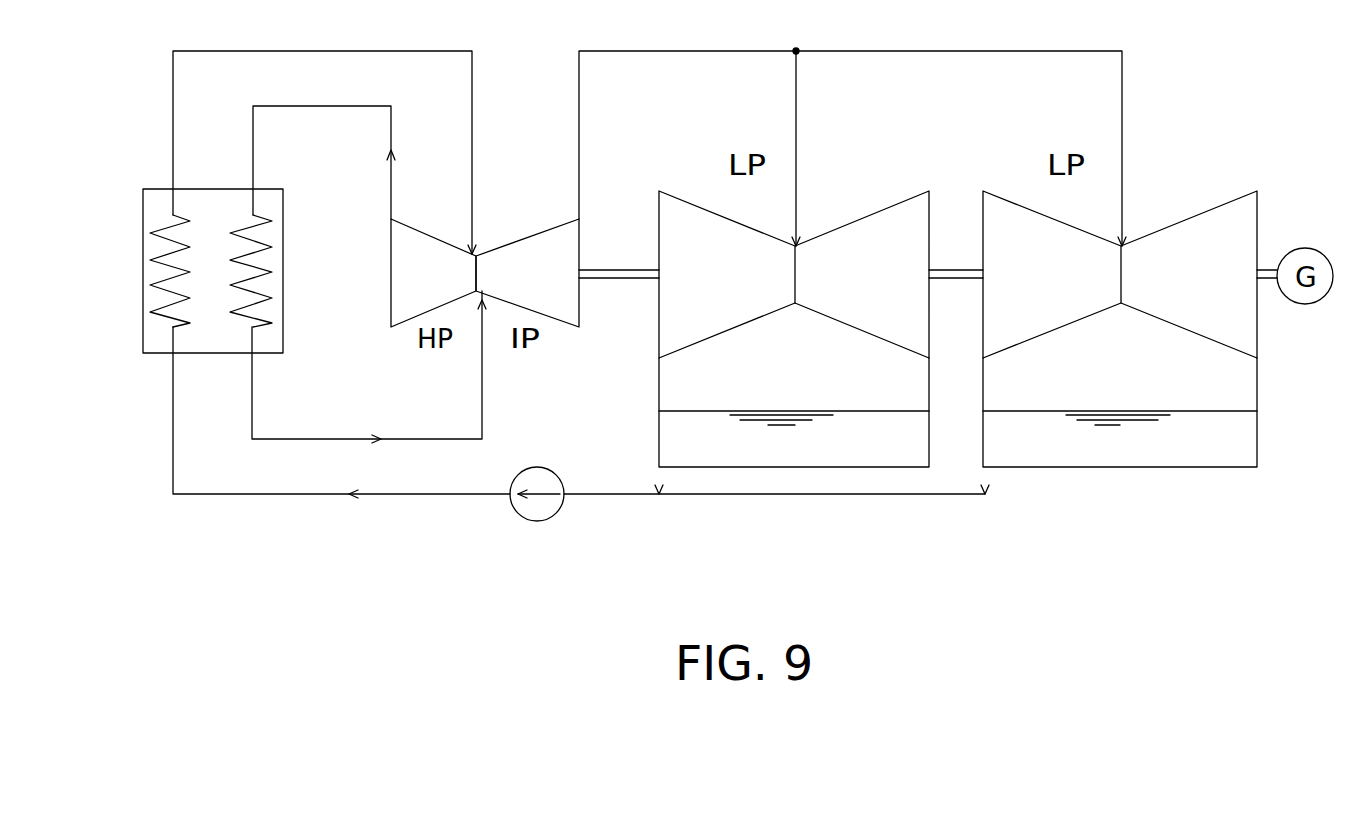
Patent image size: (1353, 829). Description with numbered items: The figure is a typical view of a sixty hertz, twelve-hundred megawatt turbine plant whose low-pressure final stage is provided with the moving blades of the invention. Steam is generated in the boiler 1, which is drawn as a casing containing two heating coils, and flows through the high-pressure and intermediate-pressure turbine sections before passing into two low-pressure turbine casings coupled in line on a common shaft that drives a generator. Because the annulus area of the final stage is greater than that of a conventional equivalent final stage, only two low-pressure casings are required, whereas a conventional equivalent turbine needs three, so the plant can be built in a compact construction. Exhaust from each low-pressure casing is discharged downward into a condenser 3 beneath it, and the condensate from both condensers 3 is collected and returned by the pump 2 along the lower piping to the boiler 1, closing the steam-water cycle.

The boiler 1 is at (143, 337).
The pump 2 is at (555, 513).
The condenser 3 is at (838, 458).